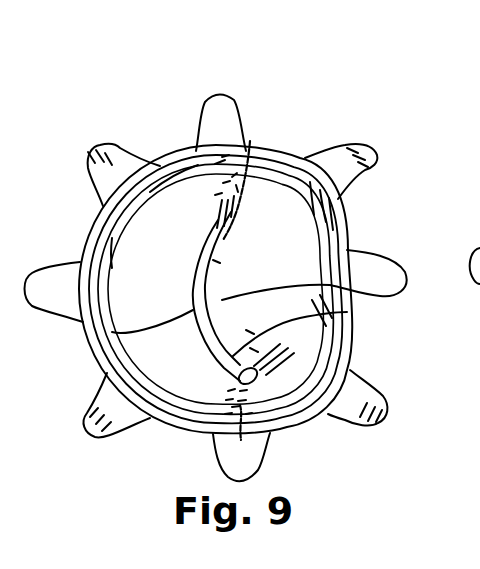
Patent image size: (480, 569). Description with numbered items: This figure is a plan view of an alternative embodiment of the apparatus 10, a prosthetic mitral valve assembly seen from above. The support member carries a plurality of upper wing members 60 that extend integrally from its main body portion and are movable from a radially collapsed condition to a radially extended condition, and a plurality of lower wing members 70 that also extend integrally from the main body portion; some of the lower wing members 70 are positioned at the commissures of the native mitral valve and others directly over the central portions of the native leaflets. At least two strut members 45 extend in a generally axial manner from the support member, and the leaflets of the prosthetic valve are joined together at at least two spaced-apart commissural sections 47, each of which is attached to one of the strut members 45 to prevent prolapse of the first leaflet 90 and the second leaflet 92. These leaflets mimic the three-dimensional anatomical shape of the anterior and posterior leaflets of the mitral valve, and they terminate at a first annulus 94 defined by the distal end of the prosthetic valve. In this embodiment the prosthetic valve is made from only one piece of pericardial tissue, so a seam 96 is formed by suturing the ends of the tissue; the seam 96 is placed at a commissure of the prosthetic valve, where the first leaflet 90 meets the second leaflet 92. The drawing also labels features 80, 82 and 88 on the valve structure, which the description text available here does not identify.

The pet toy / chew device 10 is at (297, 71).
The strut members 45 is at (201, 196).
The commissural sections 47 is at (292, 206).
The upper wing members 60 is at (189, 102).
The lower wing members 70 is at (119, 128).
The ring band 80 is at (358, 206).
The ring band lower portion 82 is at (146, 413).
The inner edge of ring 88 is at (138, 199).
The first leaflet 90 is at (107, 335).
The second leaflet 92 is at (360, 293).
The first annulus 94 is at (347, 313).
The seam 96 is at (252, 182).